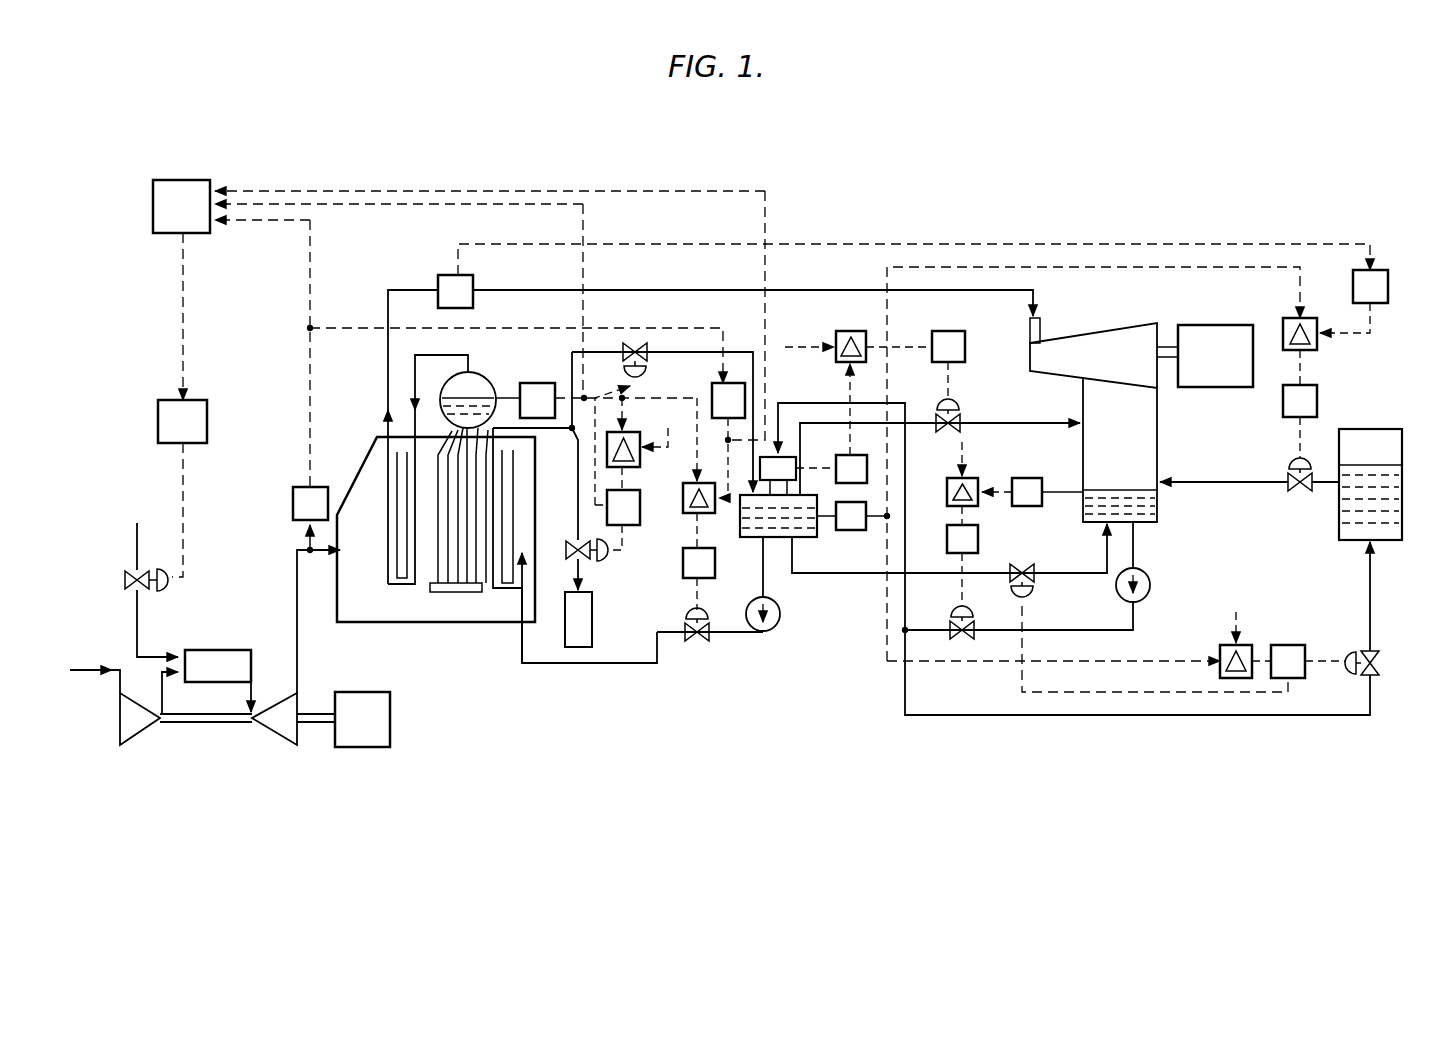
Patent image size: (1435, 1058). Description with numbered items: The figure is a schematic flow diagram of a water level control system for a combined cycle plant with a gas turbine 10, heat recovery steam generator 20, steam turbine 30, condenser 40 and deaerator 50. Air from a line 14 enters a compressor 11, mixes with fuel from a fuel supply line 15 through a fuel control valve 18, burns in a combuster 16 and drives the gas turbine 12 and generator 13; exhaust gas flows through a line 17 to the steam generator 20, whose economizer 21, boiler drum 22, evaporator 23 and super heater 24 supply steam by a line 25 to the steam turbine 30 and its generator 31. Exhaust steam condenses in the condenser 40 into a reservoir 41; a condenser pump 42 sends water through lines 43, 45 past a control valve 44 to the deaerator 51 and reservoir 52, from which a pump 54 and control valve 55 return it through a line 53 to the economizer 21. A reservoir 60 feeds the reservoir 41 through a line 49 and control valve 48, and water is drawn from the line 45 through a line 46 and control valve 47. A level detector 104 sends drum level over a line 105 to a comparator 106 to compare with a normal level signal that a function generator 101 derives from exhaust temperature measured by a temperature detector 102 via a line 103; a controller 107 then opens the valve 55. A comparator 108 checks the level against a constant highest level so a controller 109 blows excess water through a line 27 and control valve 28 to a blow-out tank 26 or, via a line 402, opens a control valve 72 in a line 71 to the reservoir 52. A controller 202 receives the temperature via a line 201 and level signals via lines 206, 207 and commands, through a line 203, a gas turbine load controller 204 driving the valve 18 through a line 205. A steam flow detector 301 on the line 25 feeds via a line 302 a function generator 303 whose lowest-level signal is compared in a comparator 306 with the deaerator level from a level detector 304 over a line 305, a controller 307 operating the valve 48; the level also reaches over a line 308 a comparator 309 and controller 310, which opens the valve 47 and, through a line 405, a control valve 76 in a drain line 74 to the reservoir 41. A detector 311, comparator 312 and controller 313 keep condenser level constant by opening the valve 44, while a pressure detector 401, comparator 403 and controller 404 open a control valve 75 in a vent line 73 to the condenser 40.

The gas turbine 10 is at (218, 740).
The compressor 11 is at (130, 745).
The gas turbine 12 is at (275, 745).
The electric generator 13 is at (362, 747).
The air line 14 is at (85, 672).
The fuel supply line 15 is at (138, 640).
The combuster 16 is at (245, 650).
The exhaust gas line 17 is at (298, 662).
The fuel control valve 18 is at (165, 588).
The heat recovery steam generator 20 is at (456, 628).
The economizer 21 is at (508, 583).
The boiler drum 22 is at (490, 365).
The evaporator 23 is at (472, 592).
The super heater 24 is at (402, 584).
The steam line 25 is at (643, 290).
The blow-out tank 26 is at (592, 630).
The blow-out line 27 is at (574, 468).
The control valve 28 is at (572, 564).
The steam turbine 30 is at (1124, 328).
The generator 31 is at (1252, 316).
The condenser 40 is at (1192, 440).
The condenser reservoir 41 is at (1157, 502).
The condenser pump 42 is at (1145, 573).
The line 43 is at (1133, 628).
The control valve 44 is at (976, 639).
The line 45 is at (906, 515).
The line 46 is at (1016, 716).
The control valve 47 is at (1380, 655).
The control valve 48 is at (1306, 491).
The line 49 is at (1246, 482).
The deaerator 50 is at (810, 385).
The deaerator 51 is at (796, 445).
The deaerator reservoir 52 is at (796, 537).
The line 53 is at (770, 594).
The deaerator pump 54 is at (766, 631).
The control valve 55 is at (700, 641).
The reservoir 60 is at (1388, 530).
The line 71 is at (705, 350).
The control valve 72 is at (622, 344).
The line 73 is at (918, 430).
The line 74 is at (935, 568).
The control valve 75 is at (958, 440).
The control valve 76 is at (1040, 560).
The function generator 101 is at (712, 384).
The temperature detector 102 is at (298, 486).
The line 103 is at (565, 327).
The level detector 104 is at (536, 382).
The line 105 is at (632, 410).
The comparator 106 is at (712, 513).
The controller 107 is at (715, 566).
The comparator 108 is at (640, 458).
The controller 109 is at (630, 525).
The line 201 is at (313, 278).
The controller 202 is at (212, 180).
The line 203 is at (186, 316).
The gas turbine load controller 204 is at (207, 425).
The line 205 is at (185, 517).
The line 206 is at (588, 218).
The line 207 is at (770, 197).
The steam flow detector 301 is at (446, 274).
The line 302 is at (1195, 242).
The function generator 303 is at (1352, 276).
The level detector 304 is at (852, 530).
The line 305 is at (1122, 268).
The comparator 306 is at (1284, 350).
The controller 307 is at (1317, 398).
The signal line 308 is at (886, 665).
The comparator 309 is at (1220, 650).
The controller 310 is at (1290, 645).
The detector 311 is at (1030, 512).
The comparator 312 is at (970, 506).
The controller 313 is at (972, 553).
The pressure detector 401 is at (838, 456).
The line 402 is at (610, 437).
The comparator 403 is at (862, 362).
The controller 404 is at (930, 334).
The line 405 is at (1160, 690).